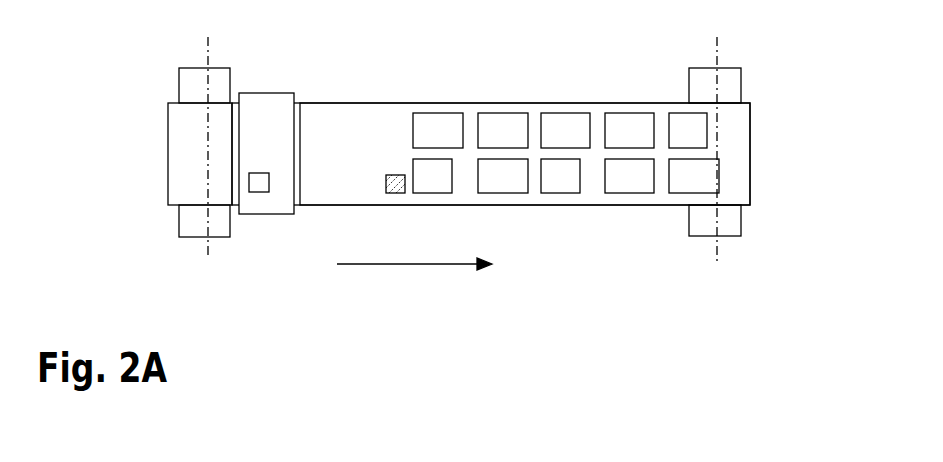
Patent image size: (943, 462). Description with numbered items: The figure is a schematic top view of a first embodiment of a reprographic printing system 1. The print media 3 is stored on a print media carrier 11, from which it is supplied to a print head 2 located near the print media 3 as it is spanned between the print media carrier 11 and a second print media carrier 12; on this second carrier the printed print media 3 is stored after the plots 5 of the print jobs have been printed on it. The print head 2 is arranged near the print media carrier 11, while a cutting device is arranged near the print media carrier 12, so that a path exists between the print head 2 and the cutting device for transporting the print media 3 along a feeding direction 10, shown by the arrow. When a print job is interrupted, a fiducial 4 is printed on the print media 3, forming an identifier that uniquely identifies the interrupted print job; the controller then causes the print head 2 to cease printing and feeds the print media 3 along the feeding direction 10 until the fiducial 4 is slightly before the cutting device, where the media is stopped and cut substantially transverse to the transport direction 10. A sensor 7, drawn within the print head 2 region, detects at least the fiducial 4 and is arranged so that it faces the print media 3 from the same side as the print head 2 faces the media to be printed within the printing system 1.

The reprographic printing system 1 is at (636, 289).
The print head 2 is at (273, 113).
The print media 3 is at (352, 123).
The fiducial 4 is at (397, 193).
The plots 5 is at (682, 82).
The sensor 7 is at (259, 185).
The feeding direction 10 is at (413, 264).
The print media carrier 11 is at (187, 81).
The print media carrier 12 is at (733, 92).